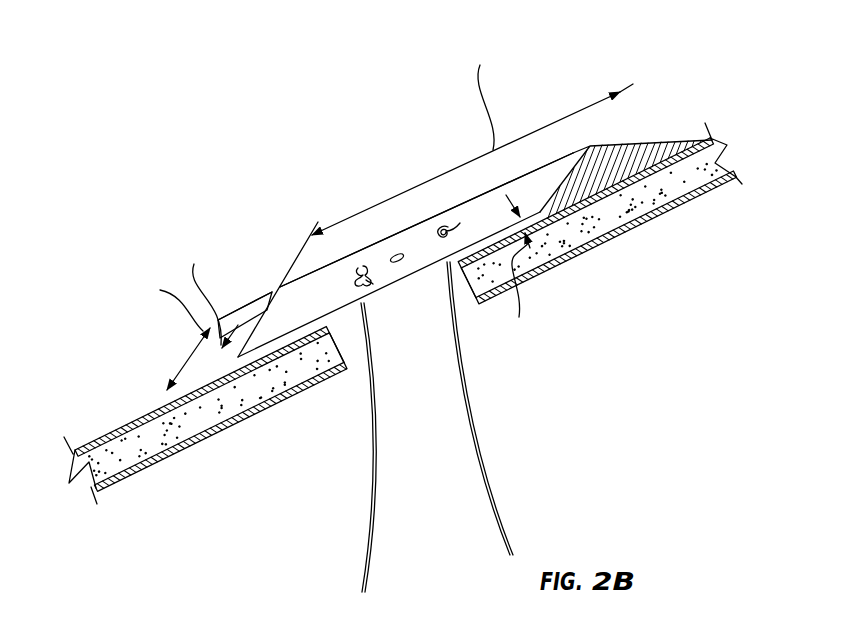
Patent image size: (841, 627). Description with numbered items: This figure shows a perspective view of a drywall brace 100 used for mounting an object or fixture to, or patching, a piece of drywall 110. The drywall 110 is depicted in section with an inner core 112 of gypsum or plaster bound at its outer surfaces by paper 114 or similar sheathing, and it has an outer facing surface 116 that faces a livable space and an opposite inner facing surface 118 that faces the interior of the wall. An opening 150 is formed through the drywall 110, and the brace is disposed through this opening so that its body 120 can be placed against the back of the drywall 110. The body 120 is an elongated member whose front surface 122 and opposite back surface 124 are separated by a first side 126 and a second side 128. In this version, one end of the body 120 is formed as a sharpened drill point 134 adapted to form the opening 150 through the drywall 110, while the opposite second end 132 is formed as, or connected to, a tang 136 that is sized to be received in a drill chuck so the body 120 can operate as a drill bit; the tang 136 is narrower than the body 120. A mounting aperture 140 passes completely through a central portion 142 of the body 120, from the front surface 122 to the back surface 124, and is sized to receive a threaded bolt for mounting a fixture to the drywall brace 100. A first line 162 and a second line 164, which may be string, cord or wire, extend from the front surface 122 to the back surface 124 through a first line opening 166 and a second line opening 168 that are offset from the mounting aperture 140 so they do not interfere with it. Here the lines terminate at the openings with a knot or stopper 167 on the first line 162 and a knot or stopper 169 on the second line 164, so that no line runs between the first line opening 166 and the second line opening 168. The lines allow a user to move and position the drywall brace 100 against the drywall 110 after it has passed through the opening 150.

The drywall brace 100 is at (203, 123).
The drywall 110 is at (166, 428).
The inner core 112 is at (144, 459).
The paper 114 is at (70, 455).
The outer facing surface 116 is at (218, 427).
The inner facing surface 118 is at (75, 452).
The body 120 is at (270, 253).
The front surface 122 is at (372, 301).
The back surface 124 is at (311, 232).
The first side 126 is at (520, 177).
The second side 128 is at (495, 230).
The second end 132 is at (252, 320).
The drill point 134 is at (572, 160).
The tang 136 is at (236, 321).
The mounting aperture 140 is at (397, 254).
The central portion 142 is at (467, 220).
The opening 150 is at (397, 401).
The first line 162 is at (367, 523).
The second line 164 is at (483, 488).
The first line opening 166 is at (360, 268).
The knot or stopper 167 is at (372, 283).
The second line opening 168 is at (437, 227).
The knot or stopper 169 is at (452, 240).